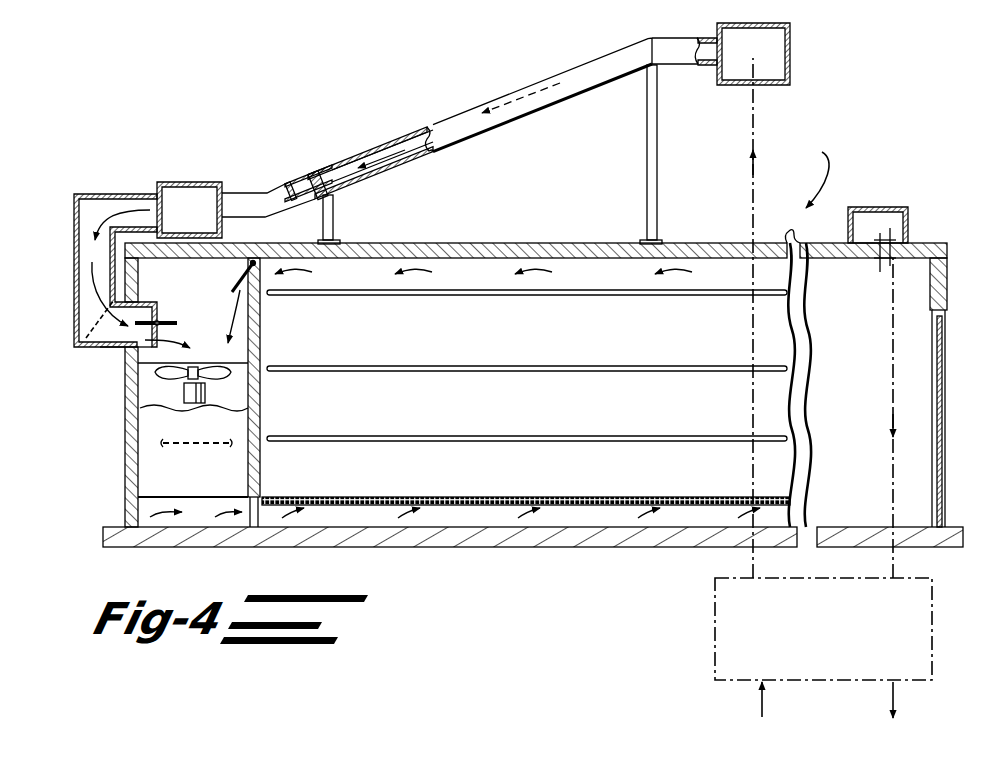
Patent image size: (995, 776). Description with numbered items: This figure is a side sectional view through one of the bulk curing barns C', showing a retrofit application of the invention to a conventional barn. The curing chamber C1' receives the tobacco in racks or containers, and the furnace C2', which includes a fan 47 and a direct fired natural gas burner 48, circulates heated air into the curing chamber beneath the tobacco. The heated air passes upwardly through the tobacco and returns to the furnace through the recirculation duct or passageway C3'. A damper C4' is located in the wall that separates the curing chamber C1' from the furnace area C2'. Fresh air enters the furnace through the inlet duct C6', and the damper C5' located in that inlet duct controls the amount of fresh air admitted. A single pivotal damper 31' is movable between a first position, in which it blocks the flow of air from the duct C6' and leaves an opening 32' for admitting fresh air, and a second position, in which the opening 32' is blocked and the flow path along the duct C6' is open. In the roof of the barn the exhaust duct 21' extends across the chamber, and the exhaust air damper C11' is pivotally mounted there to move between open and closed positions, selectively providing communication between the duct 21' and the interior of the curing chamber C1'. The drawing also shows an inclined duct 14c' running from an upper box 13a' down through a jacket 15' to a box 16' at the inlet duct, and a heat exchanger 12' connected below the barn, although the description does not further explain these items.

The air outlet box 13a' is at (782, 42).
The return air duct 14c' is at (575, 92).
The duct jacket 15' is at (347, 164).
The inlet box 16' is at (236, 184).
The inlet duct C6' is at (92, 270).
The damper C4' is at (260, 253).
The recirculation duct C3' is at (522, 223).
The bulk curing barn C' is at (817, 166).
The exhaust duct 21' is at (878, 194).
The exhaust air damper C11' is at (927, 237).
The damper C5' is at (163, 294).
The pivotal damper 31' is at (73, 319).
The opening 32' is at (96, 373).
The fan 47 is at (204, 394).
The furnace C2' is at (167, 392).
The direct fired natural gas burner 48 is at (221, 460).
The curing chamber C1' is at (526, 393).
The heat exchanger 12' is at (779, 388).